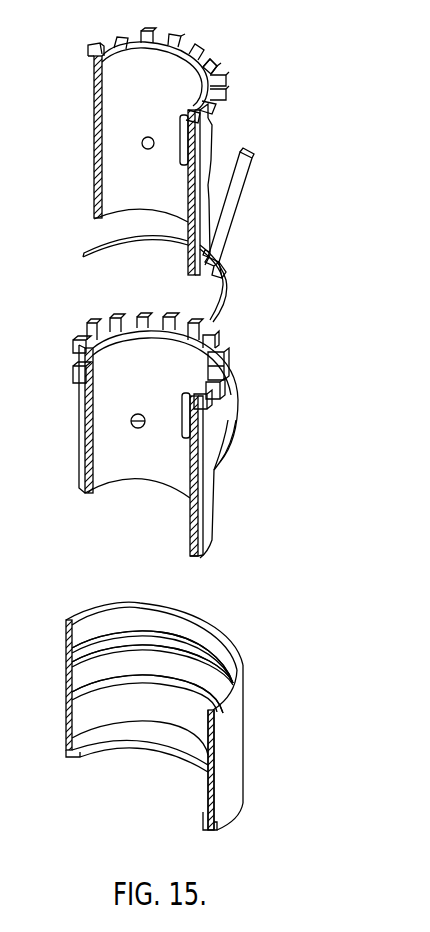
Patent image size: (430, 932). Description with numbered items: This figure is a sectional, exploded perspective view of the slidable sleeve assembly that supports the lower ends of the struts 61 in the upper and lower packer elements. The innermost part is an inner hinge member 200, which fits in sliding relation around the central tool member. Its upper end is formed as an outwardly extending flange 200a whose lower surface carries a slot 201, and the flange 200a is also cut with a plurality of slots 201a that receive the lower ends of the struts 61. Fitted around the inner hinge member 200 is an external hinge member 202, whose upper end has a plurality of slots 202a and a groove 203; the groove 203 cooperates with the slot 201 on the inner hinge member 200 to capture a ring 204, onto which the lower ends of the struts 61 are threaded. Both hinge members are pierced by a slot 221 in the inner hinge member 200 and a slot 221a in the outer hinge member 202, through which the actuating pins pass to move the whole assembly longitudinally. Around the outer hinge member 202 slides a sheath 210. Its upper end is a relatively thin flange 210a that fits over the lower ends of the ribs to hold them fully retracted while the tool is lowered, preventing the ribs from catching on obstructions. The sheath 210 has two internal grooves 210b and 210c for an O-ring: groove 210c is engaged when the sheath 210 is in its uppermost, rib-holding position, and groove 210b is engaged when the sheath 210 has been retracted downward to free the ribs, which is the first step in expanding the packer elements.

The inner hinge member 200 is at (93, 80).
The outwardly extending flange 200a is at (222, 67).
The slot 201 is at (207, 118).
The slots 201a is at (205, 50).
The slot 221 is at (178, 164).
The strut 61 is at (245, 184).
The ring 204 is at (226, 300).
The external hinge member 202 is at (218, 518).
The slots 202a is at (160, 322).
The groove 203 is at (226, 372).
The slot 221a is at (180, 422).
The sheath 210 is at (241, 747).
The flange 210a is at (65, 626).
The internal groove 210b is at (70, 664).
The internal groove 210c is at (70, 695).